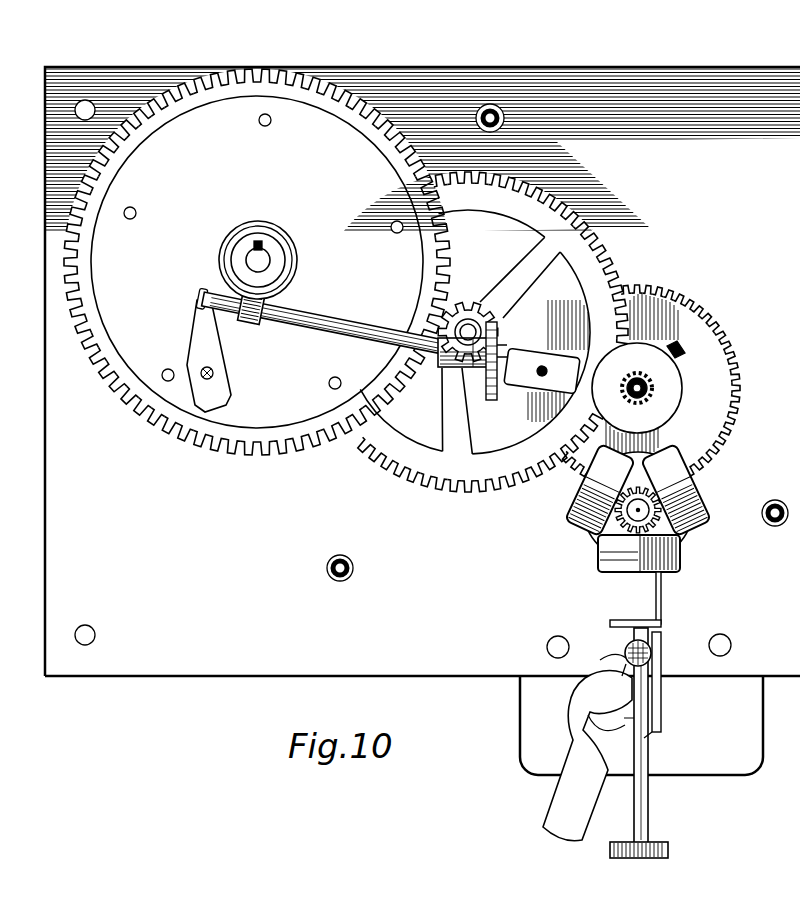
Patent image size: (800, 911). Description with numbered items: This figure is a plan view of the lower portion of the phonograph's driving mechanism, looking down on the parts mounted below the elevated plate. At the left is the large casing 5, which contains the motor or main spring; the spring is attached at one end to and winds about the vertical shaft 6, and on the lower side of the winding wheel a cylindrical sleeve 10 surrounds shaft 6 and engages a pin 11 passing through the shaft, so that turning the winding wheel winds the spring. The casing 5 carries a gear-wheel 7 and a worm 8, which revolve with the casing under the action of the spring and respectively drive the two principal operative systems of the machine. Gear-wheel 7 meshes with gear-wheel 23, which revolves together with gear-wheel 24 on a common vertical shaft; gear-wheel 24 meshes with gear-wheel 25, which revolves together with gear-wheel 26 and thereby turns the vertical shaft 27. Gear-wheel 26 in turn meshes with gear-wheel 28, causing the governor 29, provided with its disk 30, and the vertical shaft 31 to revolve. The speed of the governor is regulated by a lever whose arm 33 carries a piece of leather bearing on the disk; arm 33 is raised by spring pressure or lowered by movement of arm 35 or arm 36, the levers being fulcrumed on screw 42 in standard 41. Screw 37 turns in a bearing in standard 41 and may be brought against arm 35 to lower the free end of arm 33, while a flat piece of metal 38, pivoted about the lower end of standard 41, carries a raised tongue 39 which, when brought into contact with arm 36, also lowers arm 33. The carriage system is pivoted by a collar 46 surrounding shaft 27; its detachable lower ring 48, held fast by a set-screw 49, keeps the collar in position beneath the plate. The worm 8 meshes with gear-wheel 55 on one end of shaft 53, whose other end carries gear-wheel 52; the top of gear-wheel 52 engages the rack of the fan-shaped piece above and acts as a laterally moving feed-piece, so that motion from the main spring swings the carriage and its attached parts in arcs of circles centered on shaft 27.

The casing 5 is at (257, 413).
The vertical shaft 6 is at (248, 262).
The gear-wheel 7 is at (190, 447).
The worm 8 is at (284, 245).
The cylindrical piece or sleeve 10 is at (247, 247).
The pin 11 is at (259, 240).
The gear-wheel 23 is at (472, 302).
The gear-wheel 24 is at (612, 245).
The gear-wheel 25 is at (650, 388).
The gear-wheel 26 is at (732, 330).
The vertical shaft 27 is at (650, 400).
The gear-wheel 28 is at (596, 538).
The governor 29 is at (610, 574).
The disk 30 is at (695, 535).
The vertical shaft 31 is at (680, 566).
The arm 33 is at (662, 595).
The arm 35 is at (633, 620).
The arm 36 is at (657, 715).
The screw 37 is at (663, 845).
The flat piece of metal 38 is at (612, 657).
The raised tongue 39 is at (615, 720).
The standard 41 is at (625, 667).
The screw 42 is at (627, 647).
The collar or sleeve 46 is at (653, 395).
The projecting ring 48 is at (683, 383).
The set-screw 49 is at (684, 356).
The gear-wheel 52 is at (497, 388).
The shaft 53 is at (347, 327).
The gear-wheel 55 is at (249, 340).